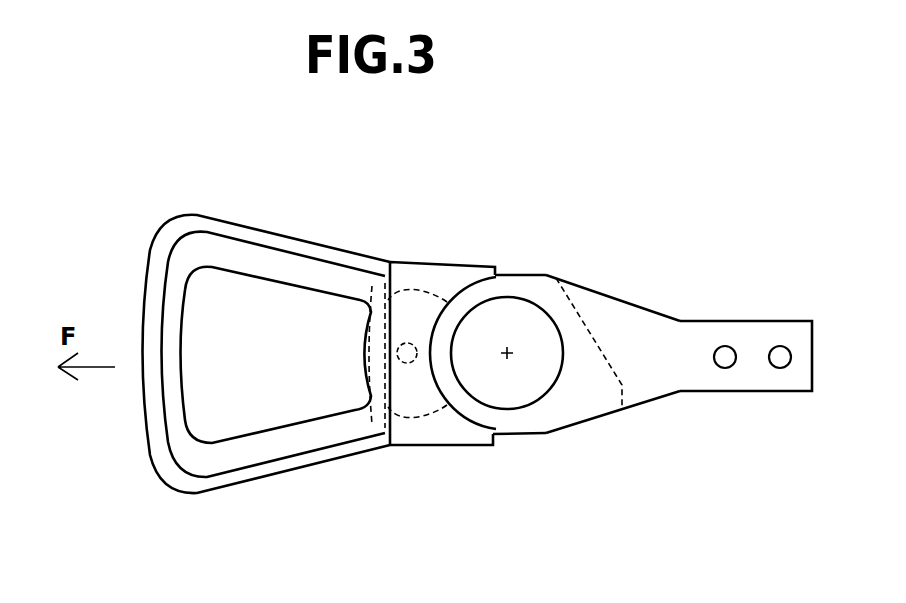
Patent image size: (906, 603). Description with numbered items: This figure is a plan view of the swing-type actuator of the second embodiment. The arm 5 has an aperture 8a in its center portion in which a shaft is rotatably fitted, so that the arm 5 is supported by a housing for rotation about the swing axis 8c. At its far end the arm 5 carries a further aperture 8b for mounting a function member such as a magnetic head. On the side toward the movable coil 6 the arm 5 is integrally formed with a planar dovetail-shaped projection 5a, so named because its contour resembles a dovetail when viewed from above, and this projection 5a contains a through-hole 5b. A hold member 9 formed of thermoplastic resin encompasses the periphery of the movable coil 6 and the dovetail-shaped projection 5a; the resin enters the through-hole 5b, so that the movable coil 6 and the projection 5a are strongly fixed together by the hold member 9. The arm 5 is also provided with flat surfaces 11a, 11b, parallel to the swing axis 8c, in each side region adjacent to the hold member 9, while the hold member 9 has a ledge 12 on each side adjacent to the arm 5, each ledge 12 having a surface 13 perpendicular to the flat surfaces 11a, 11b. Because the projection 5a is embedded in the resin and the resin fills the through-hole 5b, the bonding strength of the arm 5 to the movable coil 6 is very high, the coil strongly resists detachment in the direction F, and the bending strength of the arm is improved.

The arm 5 is at (637, 330).
The dovetail-shaped projection 5a is at (408, 400).
The through-hole 5b is at (410, 346).
The movable coil 6 is at (268, 450).
The aperture 8a is at (535, 340).
The aperture 8b is at (780, 368).
The swing axis 8c is at (509, 355).
The hold member 9 is at (167, 482).
The flat surface 11a is at (523, 270).
The flat surface 11b is at (527, 437).
The ledge 12 is at (470, 267).
The surface 13 is at (500, 273).